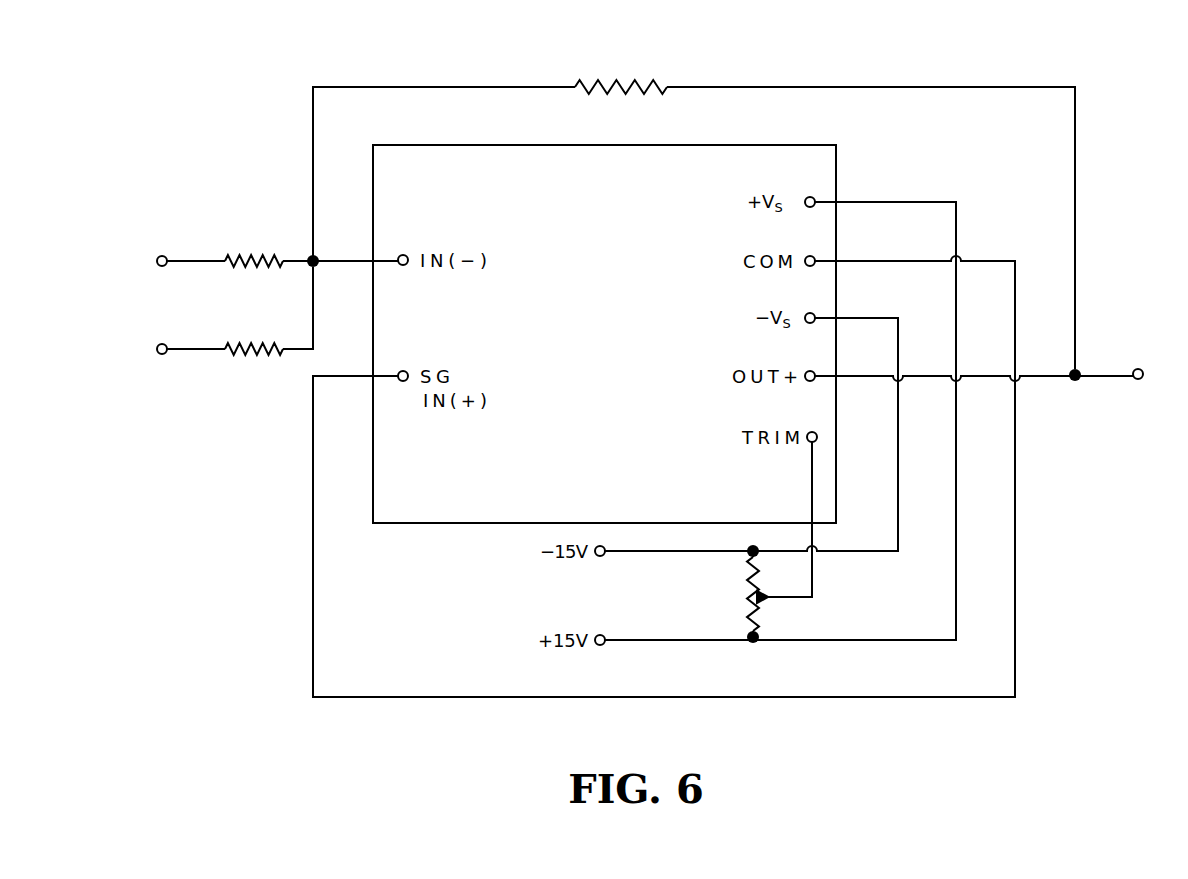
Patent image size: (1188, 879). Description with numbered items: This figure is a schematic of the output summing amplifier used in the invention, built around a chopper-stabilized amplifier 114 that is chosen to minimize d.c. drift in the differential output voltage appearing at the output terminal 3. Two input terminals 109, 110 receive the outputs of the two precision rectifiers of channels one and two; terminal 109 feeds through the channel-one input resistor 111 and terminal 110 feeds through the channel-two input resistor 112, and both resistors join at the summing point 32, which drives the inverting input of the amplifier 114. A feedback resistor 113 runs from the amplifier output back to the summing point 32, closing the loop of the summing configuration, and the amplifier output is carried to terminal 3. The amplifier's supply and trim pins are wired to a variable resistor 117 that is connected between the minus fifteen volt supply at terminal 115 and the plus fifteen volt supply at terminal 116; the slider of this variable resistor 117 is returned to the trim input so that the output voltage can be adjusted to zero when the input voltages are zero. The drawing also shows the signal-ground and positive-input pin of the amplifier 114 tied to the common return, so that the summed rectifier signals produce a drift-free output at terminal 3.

The terminal 3 is at (1141, 379).
The summing point 32 is at (318, 258).
The terminal 109 is at (165, 256).
The terminal 110 is at (168, 355).
The input resistor 111 is at (252, 261).
The input resistor 112 is at (256, 352).
The feedback resistor 113 is at (642, 80).
The chopper-stabilized amplifier 114 is at (666, 145).
The terminal 115 is at (605, 556).
The terminal 116 is at (605, 645).
The variable resistor 117 is at (748, 589).